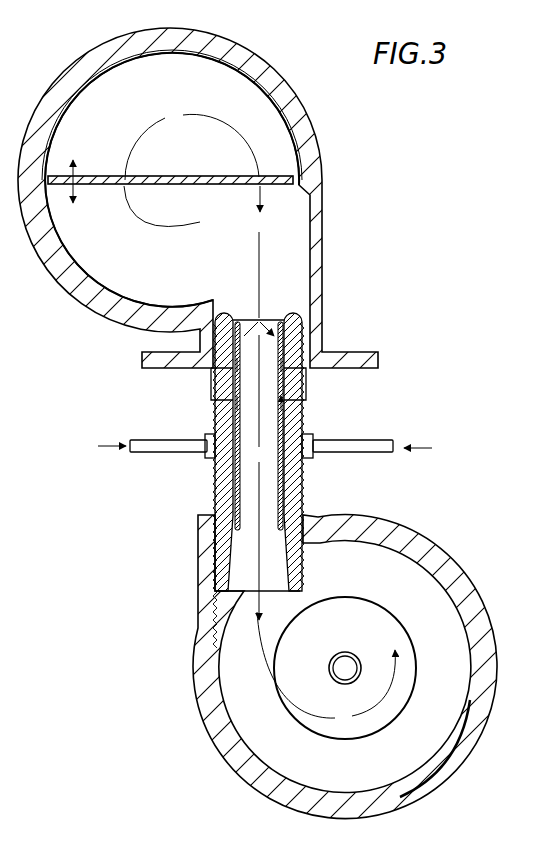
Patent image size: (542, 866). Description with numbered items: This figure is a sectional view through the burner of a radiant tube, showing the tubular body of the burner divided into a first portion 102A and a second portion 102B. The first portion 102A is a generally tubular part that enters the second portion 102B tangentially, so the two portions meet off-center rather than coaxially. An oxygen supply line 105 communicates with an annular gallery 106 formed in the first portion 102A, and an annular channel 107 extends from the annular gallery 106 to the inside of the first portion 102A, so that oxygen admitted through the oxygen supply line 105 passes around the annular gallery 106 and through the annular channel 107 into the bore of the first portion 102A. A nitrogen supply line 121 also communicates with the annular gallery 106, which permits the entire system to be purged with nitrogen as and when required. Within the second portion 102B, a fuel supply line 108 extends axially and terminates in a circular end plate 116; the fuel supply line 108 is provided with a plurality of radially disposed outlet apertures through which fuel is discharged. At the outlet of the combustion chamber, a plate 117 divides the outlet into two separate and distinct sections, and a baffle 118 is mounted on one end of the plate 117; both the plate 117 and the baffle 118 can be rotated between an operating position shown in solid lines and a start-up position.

The baffle 118 is at (120, 122).
The plate 117 is at (228, 176).
The annular channel 107 is at (243, 330).
The annular gallery 106 is at (228, 412).
The oxygen supply line 105 is at (142, 440).
The nitrogen supply line 121 is at (377, 445).
The first portion of the tubular body 102A is at (310, 487).
The second portion of the tubular body 102B is at (433, 546).
The circular end plate 116 is at (388, 609).
The fuel supply line 108 is at (333, 659).